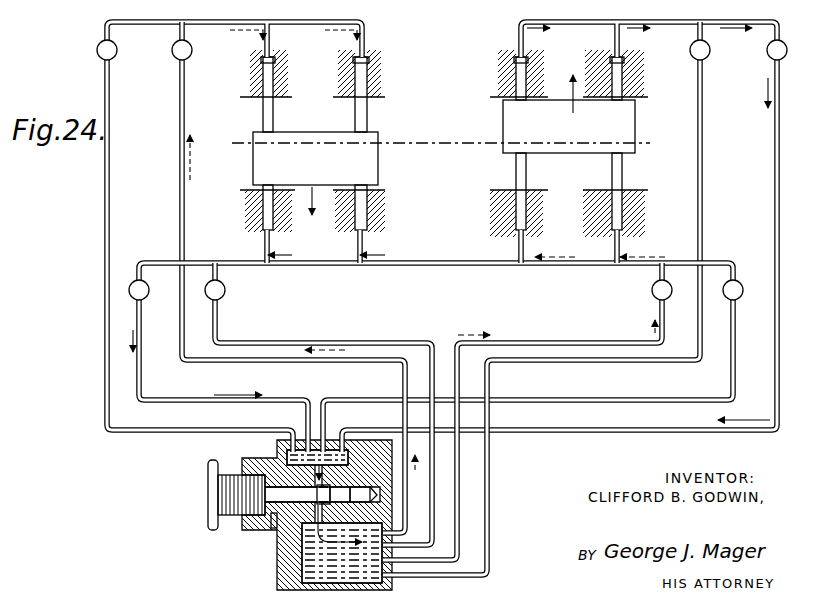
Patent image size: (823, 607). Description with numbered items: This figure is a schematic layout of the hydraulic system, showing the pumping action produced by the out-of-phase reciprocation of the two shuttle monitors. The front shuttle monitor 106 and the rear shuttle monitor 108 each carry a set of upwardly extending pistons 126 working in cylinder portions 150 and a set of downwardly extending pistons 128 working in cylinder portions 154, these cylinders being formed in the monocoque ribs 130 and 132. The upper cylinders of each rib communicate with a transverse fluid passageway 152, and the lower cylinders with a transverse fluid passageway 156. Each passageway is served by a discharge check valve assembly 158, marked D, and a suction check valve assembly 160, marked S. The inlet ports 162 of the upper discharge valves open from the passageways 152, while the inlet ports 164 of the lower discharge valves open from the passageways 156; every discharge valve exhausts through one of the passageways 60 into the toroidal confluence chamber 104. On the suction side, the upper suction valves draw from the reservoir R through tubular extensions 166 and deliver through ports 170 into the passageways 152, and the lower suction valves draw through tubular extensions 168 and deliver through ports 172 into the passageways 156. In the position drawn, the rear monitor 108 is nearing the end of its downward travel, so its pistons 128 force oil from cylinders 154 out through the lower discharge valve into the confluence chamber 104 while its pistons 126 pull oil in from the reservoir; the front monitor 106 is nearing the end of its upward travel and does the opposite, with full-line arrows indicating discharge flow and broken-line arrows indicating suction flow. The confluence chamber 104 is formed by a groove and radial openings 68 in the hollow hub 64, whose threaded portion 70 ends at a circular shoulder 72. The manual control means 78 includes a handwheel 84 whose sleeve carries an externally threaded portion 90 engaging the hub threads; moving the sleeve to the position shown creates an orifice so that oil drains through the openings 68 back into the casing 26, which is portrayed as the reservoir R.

The casing 26 is at (385, 585).
The passageways 60 is at (104, 210).
The hollow hub 64 is at (273, 521).
The radial openings 68 is at (326, 448).
The threaded portion 70 is at (322, 489).
The circular shoulder 72 is at (278, 526).
The manual control means 78 is at (204, 497).
The handwheel 84 is at (206, 527).
The externally threaded portion 90 is at (240, 480).
The confluence chamber 104 is at (349, 457).
The front shuttle monitor 106 is at (625, 115).
The rear shuttle monitor 108 is at (378, 152).
The upwardly extending pistons 126 is at (358, 108).
The downwardly extending pistons 128 is at (264, 207).
The monocoque rib 130 is at (597, 203).
The rear monocoque rib 132 is at (357, 76).
The cylinder portions 150 is at (357, 62).
The transverse fluid passageway 152 is at (216, 28).
The cylinder portions 154 is at (263, 230).
The transverse fluid passageway 156 is at (363, 262).
The discharge check valve assembly 158 is at (97, 50).
The suction check valve assembly 160 is at (173, 57).
The inlet ports 162 is at (104, 26).
The inlet ports 164 is at (140, 266).
The tubular extensions 166 is at (179, 107).
The tubular extensions 168 is at (352, 340).
The ports 170 is at (179, 33).
The ports 172 is at (218, 268).
The reservoir R is at (305, 566).